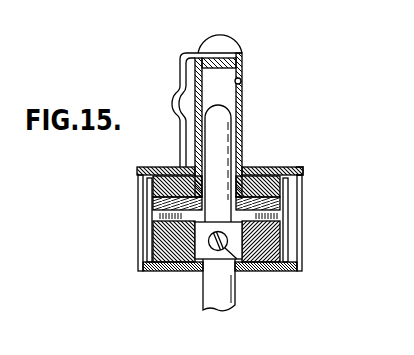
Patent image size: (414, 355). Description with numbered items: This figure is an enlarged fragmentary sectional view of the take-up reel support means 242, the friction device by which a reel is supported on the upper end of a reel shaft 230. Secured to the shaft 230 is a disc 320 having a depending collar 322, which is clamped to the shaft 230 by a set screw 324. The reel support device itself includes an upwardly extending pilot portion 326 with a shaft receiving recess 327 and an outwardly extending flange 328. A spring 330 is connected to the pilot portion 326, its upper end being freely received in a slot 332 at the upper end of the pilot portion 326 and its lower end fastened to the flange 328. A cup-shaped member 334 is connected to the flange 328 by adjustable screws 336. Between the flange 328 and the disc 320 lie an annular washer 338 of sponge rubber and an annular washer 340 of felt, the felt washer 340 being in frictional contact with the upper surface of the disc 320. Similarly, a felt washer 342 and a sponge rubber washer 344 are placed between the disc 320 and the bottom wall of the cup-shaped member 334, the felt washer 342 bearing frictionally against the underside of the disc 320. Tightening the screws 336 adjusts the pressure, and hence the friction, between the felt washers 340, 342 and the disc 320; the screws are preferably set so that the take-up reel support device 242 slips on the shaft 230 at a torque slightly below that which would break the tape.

The slot 332 is at (228, 44).
The spring 330 is at (180, 73).
The shaft receiving recess 327 is at (241, 81).
The pilot portion 326 is at (243, 110).
The flange 328 is at (265, 167).
The take-up reel support means 242 is at (307, 171).
The annular washer 338 is at (136, 176).
The depending collar 322 is at (299, 241).
The adjustable screws 336 is at (150, 240).
The disc 320 is at (278, 218).
The annular washer 340 is at (162, 200).
The cup-shaped member 334 is at (184, 271).
The annular washer 344 is at (188, 262).
The annular washer 342 is at (160, 275).
The set screw 324 is at (256, 278).
The reel shaft 230 is at (235, 306).